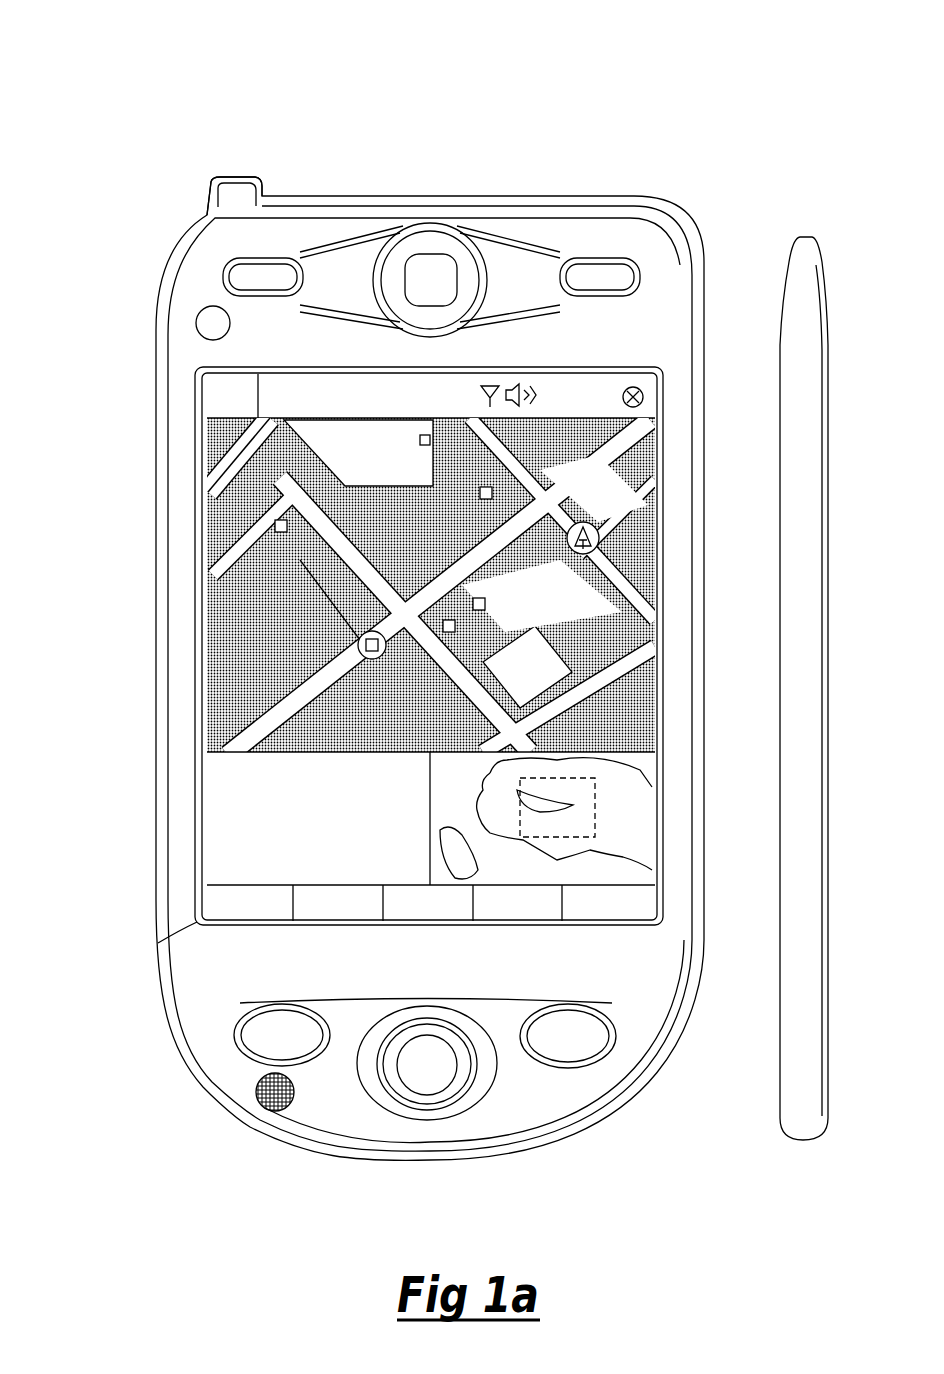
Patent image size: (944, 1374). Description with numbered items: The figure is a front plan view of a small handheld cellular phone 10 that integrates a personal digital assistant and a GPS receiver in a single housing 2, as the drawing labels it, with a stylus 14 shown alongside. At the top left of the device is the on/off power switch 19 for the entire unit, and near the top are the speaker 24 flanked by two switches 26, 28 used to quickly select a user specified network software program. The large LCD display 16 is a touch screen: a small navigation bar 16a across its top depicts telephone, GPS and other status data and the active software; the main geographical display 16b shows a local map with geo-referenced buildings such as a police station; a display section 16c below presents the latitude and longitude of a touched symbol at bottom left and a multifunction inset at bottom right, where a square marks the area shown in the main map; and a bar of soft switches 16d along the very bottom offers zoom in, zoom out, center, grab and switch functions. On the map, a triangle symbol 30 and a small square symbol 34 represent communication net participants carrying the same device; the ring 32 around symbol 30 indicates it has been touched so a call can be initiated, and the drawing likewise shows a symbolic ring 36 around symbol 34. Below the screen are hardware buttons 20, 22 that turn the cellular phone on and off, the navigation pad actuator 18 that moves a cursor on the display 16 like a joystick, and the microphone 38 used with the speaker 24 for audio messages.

The handheld device housing 2 is at (156, 722).
The cellular phone 10 is at (685, 127).
The stylus 14 is at (832, 483).
The LCD display 16 is at (620, 362).
The navigation bar 16a is at (250, 398).
The display portion 16b is at (205, 576).
The display section 16c is at (200, 826).
The soft switches 16d is at (172, 940).
The navigation pad actuator 18 is at (423, 1082).
The on/off power switch 19 is at (232, 176).
The cellular phone hardware activating button 20 is at (562, 1045).
The cellular phone hardware activating button 22 is at (280, 1047).
The speaker 24 is at (431, 290).
The switch 26 is at (597, 282).
The switch 28 is at (268, 282).
The symbol 30 is at (598, 532).
The ring 32 is at (600, 556).
The symbol 34 is at (355, 640).
The current position marker 36 is at (356, 652).
The microphone 38 is at (277, 1103).